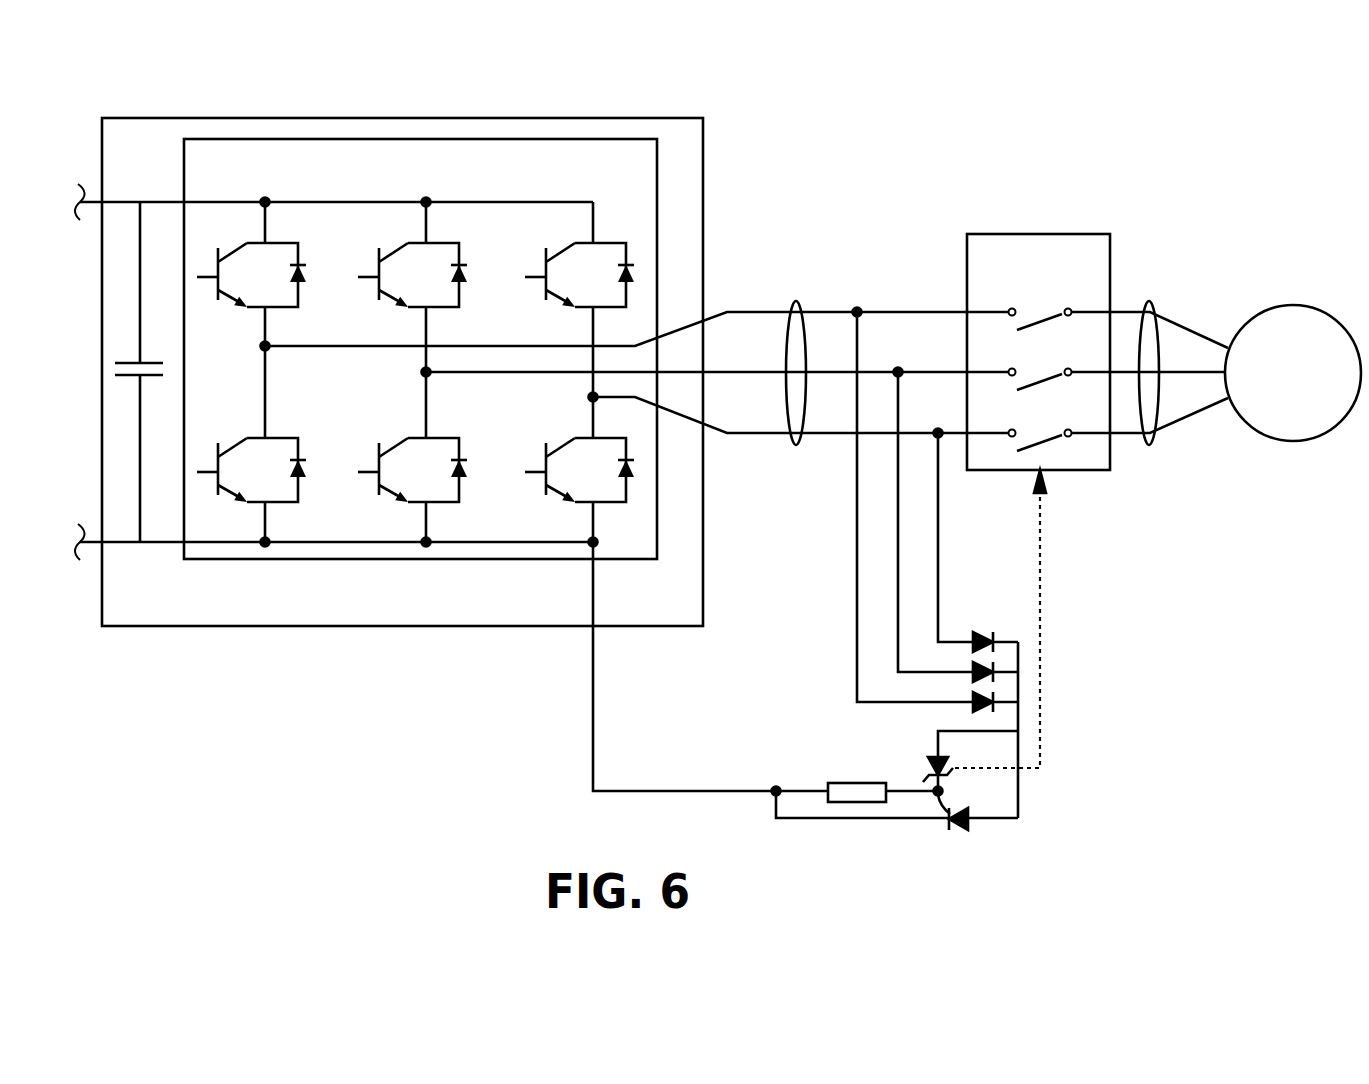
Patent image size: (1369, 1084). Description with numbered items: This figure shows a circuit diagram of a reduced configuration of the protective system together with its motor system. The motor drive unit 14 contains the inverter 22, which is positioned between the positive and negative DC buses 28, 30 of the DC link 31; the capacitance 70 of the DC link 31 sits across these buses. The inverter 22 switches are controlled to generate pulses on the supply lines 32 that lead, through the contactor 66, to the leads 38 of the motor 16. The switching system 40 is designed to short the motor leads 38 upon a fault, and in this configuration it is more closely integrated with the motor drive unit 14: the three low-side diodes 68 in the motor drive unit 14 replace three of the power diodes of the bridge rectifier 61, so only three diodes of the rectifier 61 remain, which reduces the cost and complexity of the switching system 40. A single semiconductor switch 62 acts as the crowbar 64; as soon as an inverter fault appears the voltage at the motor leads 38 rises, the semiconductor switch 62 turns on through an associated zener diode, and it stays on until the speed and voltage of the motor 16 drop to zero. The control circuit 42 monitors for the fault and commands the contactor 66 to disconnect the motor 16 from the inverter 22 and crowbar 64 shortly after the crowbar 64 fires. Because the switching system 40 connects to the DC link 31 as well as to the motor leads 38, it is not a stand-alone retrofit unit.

The motor drive unit 14 is at (413, 626).
The inverter 22 is at (417, 139).
The positive DC bus 28 is at (112, 202).
The negative DC bus 30 is at (117, 542).
The DC link 31 is at (84, 164).
The capacitance 70 is at (120, 388).
The low-side diodes 68 is at (250, 552).
The supply lines 32 is at (796, 302).
The contactor 66 is at (1038, 234).
The motor leads 38 is at (1149, 302).
The motor 16 is at (1280, 402).
The bridge rectifier 61 is at (973, 609).
The control circuit 42 is at (1062, 718).
The crowbar 64 is at (845, 750).
The switching system 40 is at (960, 848).
The semiconductor switch 62 is at (961, 822).